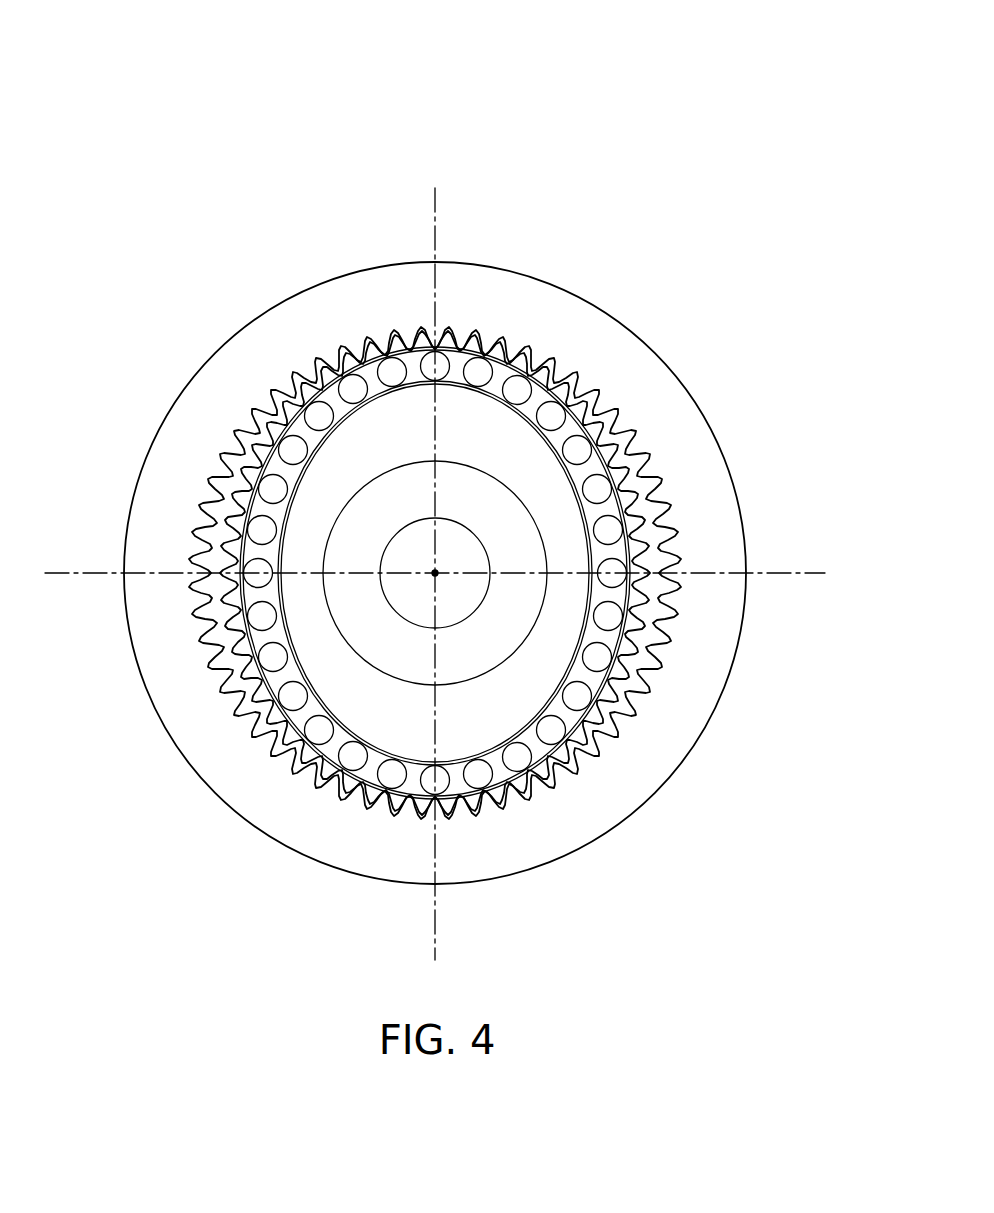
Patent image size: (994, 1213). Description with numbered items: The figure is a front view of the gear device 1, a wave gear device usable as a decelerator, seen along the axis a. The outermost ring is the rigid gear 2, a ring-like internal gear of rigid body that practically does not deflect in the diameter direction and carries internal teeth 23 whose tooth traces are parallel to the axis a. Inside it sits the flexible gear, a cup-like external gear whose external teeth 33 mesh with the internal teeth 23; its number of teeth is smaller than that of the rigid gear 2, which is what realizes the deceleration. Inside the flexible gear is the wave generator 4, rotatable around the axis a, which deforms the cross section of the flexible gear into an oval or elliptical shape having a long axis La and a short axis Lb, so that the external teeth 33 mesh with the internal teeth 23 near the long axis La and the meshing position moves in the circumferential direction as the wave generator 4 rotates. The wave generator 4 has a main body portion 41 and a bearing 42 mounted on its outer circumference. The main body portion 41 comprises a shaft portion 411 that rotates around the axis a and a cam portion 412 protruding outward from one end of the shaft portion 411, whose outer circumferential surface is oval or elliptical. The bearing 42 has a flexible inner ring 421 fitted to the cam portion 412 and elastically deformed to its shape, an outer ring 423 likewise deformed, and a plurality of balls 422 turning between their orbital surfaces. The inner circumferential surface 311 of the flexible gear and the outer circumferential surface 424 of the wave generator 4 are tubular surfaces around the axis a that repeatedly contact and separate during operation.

The gear device 1 is at (650, 144).
The rigid gear 2 is at (620, 324).
The internal teeth 23 is at (665, 645).
The inner circumferential surface 311 is at (463, 805).
The external teeth 33 is at (641, 673).
The wave generator 4 is at (342, 795).
The main body portion 41 is at (93, 728).
The shaft portion 411 is at (350, 647).
The cam portion 412 is at (358, 698).
The bearing 42 is at (665, 873).
The inner ring 421 is at (560, 780).
The balls 422 is at (527, 773).
The outer ring 423 is at (517, 762).
The outer circumferential surface 424 is at (395, 812).
The axis a is at (435, 573).
The long axis La is at (441, 232).
The short axis Lb is at (790, 576).